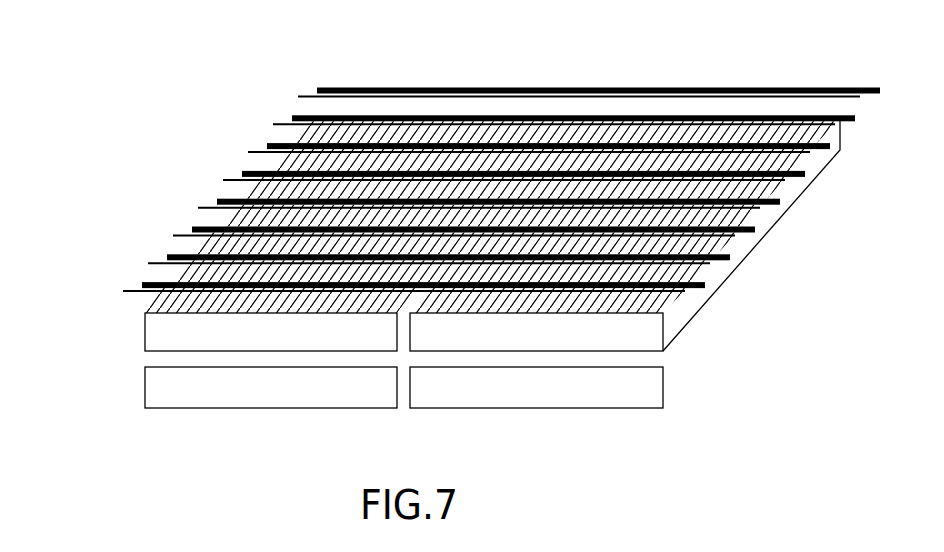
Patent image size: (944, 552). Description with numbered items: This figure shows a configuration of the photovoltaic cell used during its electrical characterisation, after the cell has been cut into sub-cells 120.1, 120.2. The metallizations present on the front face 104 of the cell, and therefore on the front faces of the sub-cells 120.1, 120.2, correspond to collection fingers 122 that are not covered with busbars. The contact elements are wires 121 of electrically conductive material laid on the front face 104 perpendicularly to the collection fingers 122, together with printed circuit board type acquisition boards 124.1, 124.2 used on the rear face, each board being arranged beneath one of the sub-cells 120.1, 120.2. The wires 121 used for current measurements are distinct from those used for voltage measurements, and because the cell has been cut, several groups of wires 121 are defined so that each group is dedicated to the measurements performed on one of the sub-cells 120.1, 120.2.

The wires 121 is at (348, 86).
The front face 104 is at (802, 134).
The collection fingers 122 is at (665, 300).
The sub-cell 120.1 is at (160, 333).
The sub-cell 120.2 is at (655, 335).
The acquisition board 124.1 is at (247, 398).
The acquisition board 124.2 is at (528, 398).